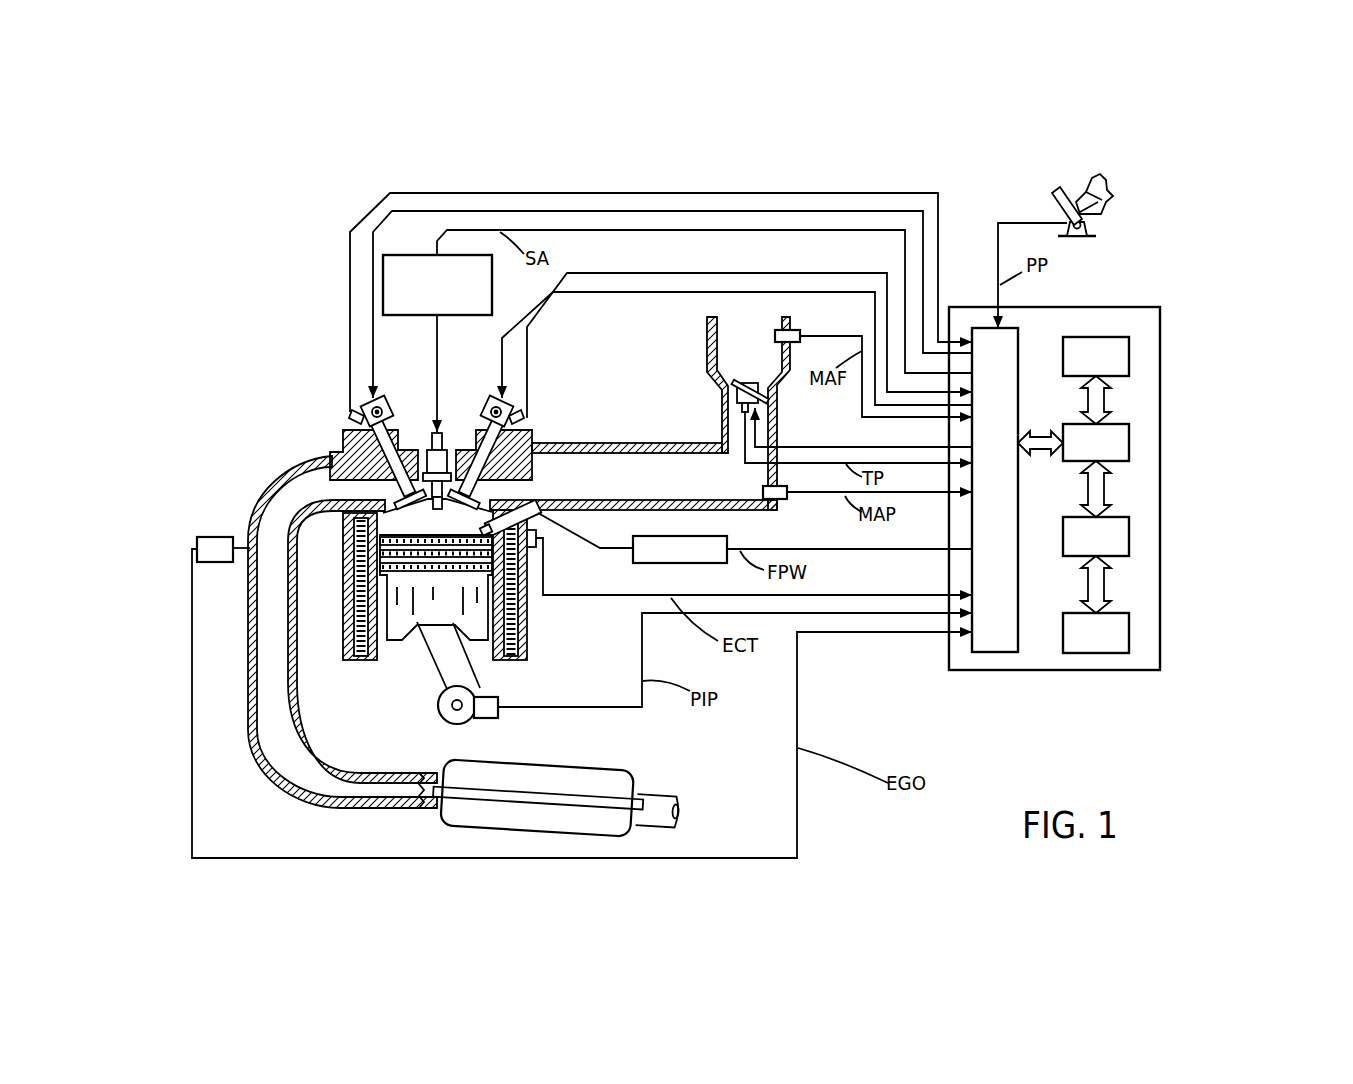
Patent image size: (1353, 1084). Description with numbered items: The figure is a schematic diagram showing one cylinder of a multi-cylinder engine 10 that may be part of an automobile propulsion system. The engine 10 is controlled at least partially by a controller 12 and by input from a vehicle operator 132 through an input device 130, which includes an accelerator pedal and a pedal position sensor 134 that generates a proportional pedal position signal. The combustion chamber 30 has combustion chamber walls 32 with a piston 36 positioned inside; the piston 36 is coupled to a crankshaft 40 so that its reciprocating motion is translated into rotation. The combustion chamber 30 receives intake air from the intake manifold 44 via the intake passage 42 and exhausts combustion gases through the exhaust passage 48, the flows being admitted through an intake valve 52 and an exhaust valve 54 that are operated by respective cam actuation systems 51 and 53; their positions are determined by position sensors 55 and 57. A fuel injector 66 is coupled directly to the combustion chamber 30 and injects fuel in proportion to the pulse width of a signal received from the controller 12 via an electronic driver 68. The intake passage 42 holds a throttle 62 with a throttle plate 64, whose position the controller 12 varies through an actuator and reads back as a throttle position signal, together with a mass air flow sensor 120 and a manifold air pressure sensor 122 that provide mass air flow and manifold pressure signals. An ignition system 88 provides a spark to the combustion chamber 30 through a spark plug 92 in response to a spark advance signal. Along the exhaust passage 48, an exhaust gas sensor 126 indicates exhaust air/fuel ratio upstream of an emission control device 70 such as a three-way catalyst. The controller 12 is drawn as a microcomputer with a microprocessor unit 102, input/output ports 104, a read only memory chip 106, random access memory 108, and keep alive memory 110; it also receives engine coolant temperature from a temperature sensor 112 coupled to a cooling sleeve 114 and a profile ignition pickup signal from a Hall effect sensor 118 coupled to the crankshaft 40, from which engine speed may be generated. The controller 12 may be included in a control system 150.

The engine 10 is at (172, 143).
The controller 12 is at (1094, 475).
The combustion chamber 30 is at (347, 613).
The combustion chamber walls 32 is at (385, 655).
The piston 36 is at (420, 612).
The crankshaft 40 is at (447, 725).
The intake passage 42 is at (735, 361).
The intake manifold 44 is at (678, 491).
The exhaust passage 48 is at (300, 497).
The cam actuation system 51 is at (492, 398).
The intake valve 52 is at (480, 487).
The cam actuation system 53 is at (382, 398).
The exhaust valve 54 is at (343, 460).
The position sensor 55 is at (518, 421).
The position sensor 57 is at (358, 416).
The throttle 62 is at (760, 392).
The throttle plate 64 is at (722, 397).
The fuel injector 66 is at (541, 517).
The electronic driver 68 is at (658, 565).
The emission control device 70 is at (603, 770).
The ignition system 88 is at (397, 254).
The spark plug 92 is at (446, 440).
The microprocessor unit 102 is at (1130, 446).
The input/output ports 104 is at (1020, 336).
The read only memory chip 106 is at (1130, 355).
The random access memory 108 is at (1130, 536).
The keep alive memory 110 is at (1130, 631).
The temperature sensor 112 is at (538, 544).
The cooling sleeve 114 is at (512, 613).
The Hall effect sensor 118 is at (488, 720).
The mass air flow sensor 120 is at (795, 330).
The manifold air pressure sensor 122 is at (787, 500).
The exhaust gas sensor 126 is at (200, 541).
The input device 130 is at (1058, 199).
The vehicle operator 132 is at (1108, 190).
The pedal position sensor 134 is at (1097, 225).
The control system 150 is at (1233, 181).